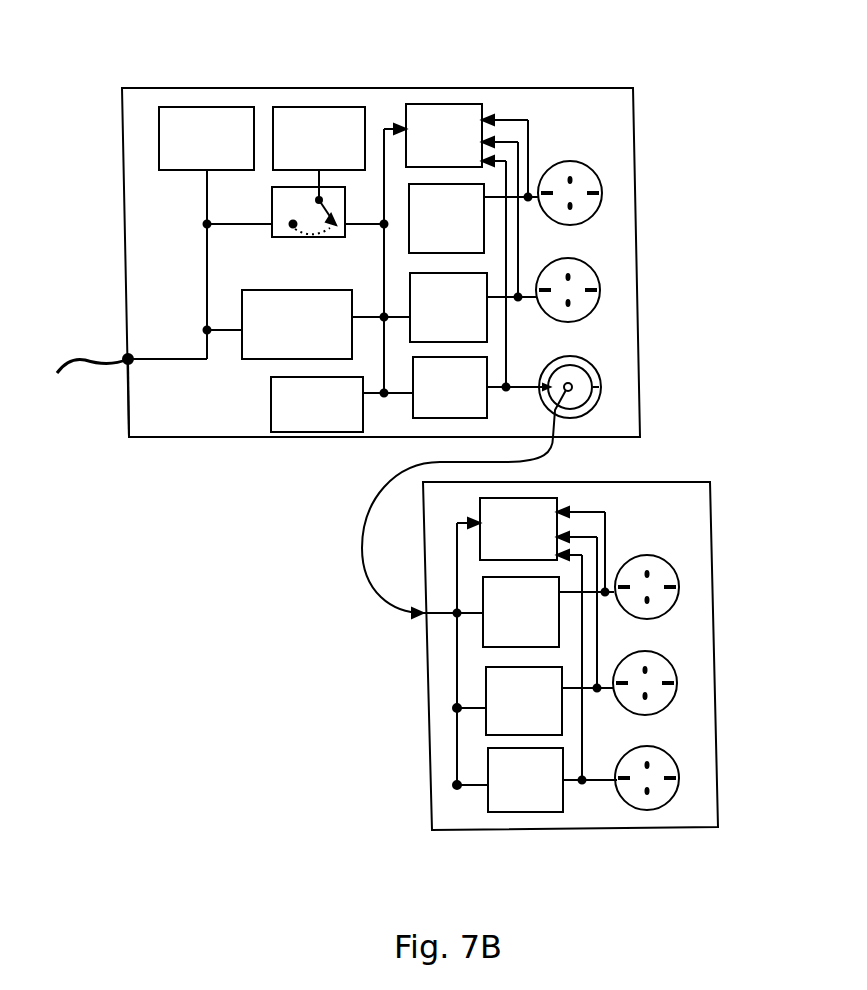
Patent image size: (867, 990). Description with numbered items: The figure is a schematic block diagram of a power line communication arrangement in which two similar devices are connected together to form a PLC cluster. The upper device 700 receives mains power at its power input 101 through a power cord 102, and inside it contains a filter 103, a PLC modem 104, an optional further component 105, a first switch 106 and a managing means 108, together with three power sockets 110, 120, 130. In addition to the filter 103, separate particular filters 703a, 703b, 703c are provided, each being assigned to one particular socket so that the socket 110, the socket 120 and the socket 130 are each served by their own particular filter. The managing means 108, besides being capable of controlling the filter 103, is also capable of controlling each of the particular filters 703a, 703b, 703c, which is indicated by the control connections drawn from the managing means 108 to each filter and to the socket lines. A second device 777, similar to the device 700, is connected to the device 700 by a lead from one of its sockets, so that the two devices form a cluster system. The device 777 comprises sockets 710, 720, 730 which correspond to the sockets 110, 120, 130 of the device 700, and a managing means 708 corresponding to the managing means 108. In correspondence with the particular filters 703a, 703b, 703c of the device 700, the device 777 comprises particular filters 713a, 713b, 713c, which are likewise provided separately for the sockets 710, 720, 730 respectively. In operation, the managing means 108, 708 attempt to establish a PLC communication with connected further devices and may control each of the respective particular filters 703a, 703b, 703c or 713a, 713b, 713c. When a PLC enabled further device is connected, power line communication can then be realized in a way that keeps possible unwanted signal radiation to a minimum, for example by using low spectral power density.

The device 700 is at (122, 128).
The optional further component 105 is at (227, 107).
The PLC modem 104 is at (347, 107).
The managing means 108 is at (466, 104).
The first switch 106 is at (282, 240).
The filter 103 is at (344, 290).
The power cord 102 is at (97, 352).
The power input 101 is at (124, 370).
The particular filter 703a is at (446, 218).
The particular filter 703b is at (448, 307).
The particular filter 703c is at (450, 387).
The power socket 110 is at (598, 176).
The power socket 120 is at (598, 298).
The power socket 130 is at (598, 372).
The managing means 708 is at (552, 498).
The particular filter 713a is at (521, 612).
The particular filter 713b is at (524, 701).
The particular filter 713c is at (525, 780).
The socket 710 is at (677, 592).
The socket 720 is at (675, 693).
The socket 730 is at (675, 790).
The device 777 is at (431, 805).